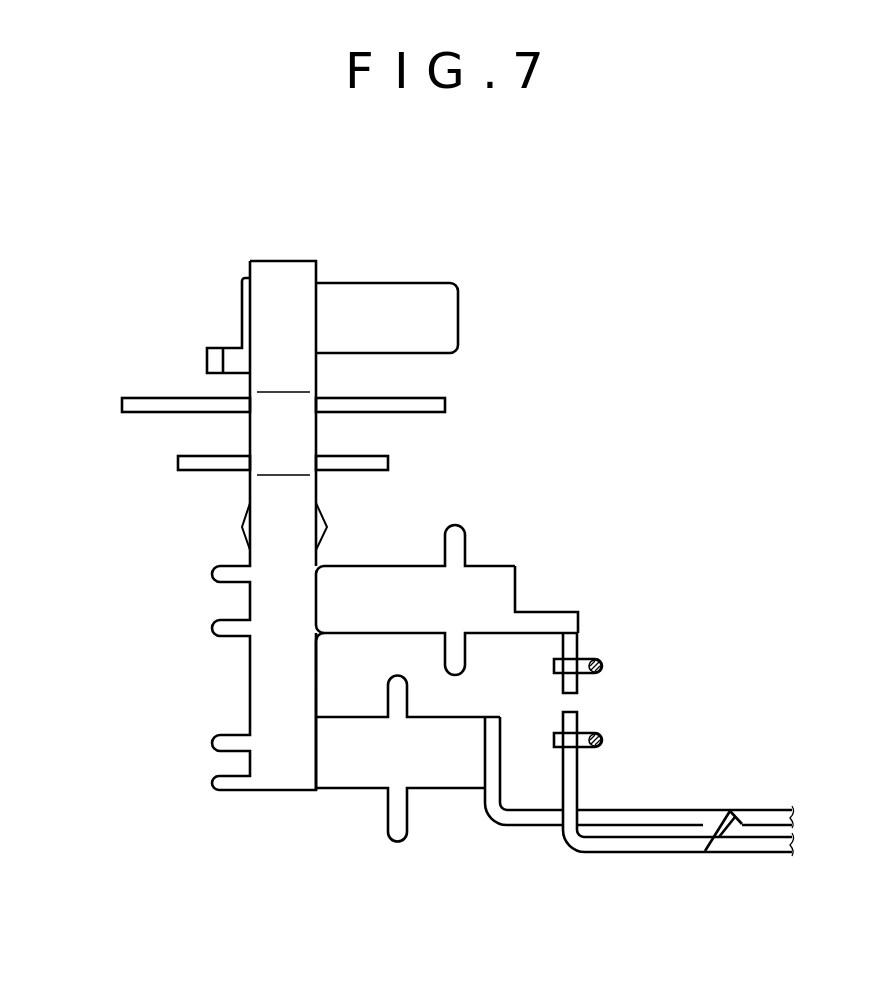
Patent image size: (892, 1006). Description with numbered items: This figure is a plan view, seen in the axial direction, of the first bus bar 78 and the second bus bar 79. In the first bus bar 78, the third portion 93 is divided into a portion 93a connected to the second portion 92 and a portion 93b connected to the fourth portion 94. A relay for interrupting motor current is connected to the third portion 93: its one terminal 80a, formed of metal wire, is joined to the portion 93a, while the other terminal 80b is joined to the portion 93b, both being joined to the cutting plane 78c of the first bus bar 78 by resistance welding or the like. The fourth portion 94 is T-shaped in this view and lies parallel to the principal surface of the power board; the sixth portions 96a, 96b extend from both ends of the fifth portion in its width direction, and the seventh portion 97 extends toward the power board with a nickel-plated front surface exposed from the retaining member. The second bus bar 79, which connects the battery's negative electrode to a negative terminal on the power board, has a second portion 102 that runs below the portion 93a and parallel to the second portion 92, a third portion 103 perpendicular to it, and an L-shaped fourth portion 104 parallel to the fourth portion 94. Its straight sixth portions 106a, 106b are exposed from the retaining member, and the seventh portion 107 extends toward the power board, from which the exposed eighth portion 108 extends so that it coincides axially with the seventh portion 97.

The seventh portion 97 is at (250, 272).
The seventh portion 107 is at (242, 318).
The eighth portion 108 is at (460, 330).
The sixth portion 106a is at (428, 413).
The sixth portion 106b is at (135, 413).
The sixth portion 96a is at (365, 471).
The sixth portion 96b is at (201, 471).
The fourth portion 94 is at (488, 563).
The first bus bar 78 is at (557, 604).
The third portion 93 is at (646, 696).
The portion 93a is at (578, 717).
The portion 93b is at (578, 686).
The one terminal 80a is at (603, 748).
The other terminal 80b is at (602, 664).
The cutting plane 78c is at (572, 782).
The second bus bar 79 is at (486, 710).
The third portion 103 is at (483, 753).
The fourth portion 104 is at (343, 790).
The second portion 102 is at (530, 827).
The second portion 92 is at (628, 854).